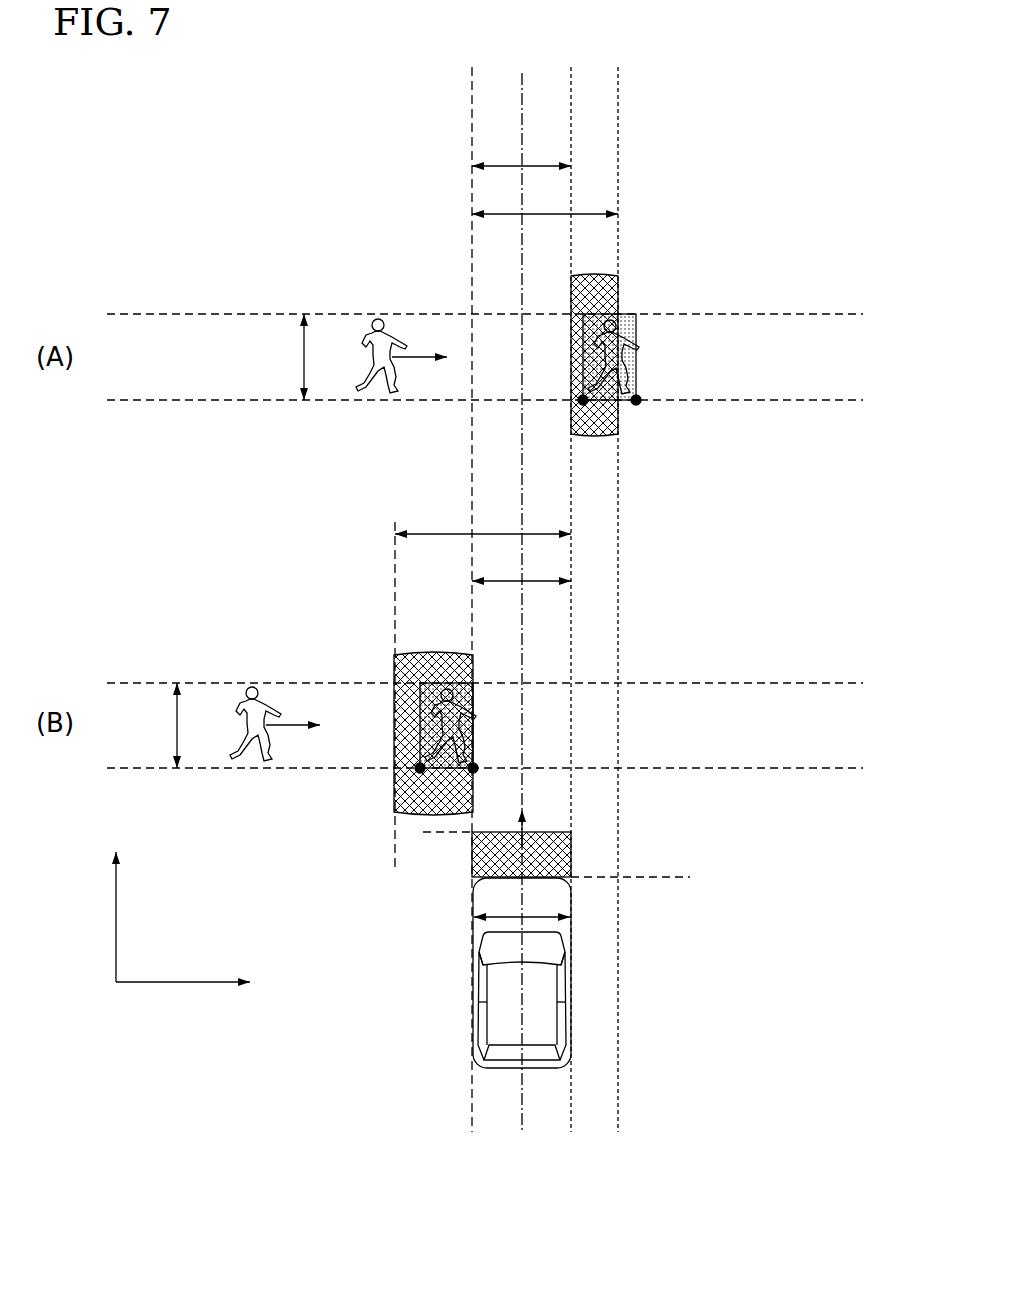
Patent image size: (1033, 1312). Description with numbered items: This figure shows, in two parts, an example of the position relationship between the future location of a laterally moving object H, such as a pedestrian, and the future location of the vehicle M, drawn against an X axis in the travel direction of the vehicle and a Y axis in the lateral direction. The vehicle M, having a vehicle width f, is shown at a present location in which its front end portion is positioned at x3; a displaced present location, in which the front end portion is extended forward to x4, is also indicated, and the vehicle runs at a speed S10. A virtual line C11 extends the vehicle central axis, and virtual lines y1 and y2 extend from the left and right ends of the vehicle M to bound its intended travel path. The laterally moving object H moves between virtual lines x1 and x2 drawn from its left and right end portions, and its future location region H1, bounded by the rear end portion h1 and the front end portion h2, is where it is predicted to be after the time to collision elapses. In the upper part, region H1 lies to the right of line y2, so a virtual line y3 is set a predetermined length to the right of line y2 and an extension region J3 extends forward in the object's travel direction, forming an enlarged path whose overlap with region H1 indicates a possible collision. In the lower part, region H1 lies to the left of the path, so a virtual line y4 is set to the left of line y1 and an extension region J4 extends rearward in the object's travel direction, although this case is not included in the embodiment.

The virtual line y1 is at (472, 91).
The virtual line y2 is at (572, 95).
The virtual line y3 is at (619, 129).
The virtual line y4 is at (395, 582).
The virtual line C11 is at (522, 124).
The virtual line x1 is at (828, 313).
The virtual line x2 is at (826, 401).
The front end position of the vehicle x3 is at (668, 879).
The extended front end position of the vehicle x4 is at (446, 840).
The vehicle width f is at (536, 915).
The laterally moving object H is at (379, 318).
The future location region H1 is at (589, 320).
The rear end portion h1 is at (585, 408).
The front end portion h2 is at (641, 406).
The extension region J3 is at (600, 292).
The extension region J4 is at (412, 658).
The speed of the vehicle S10 is at (552, 840).
The vehicle M is at (572, 1005).
The X-axis direction X is at (116, 899).
The Y-axis direction Y is at (194, 983).